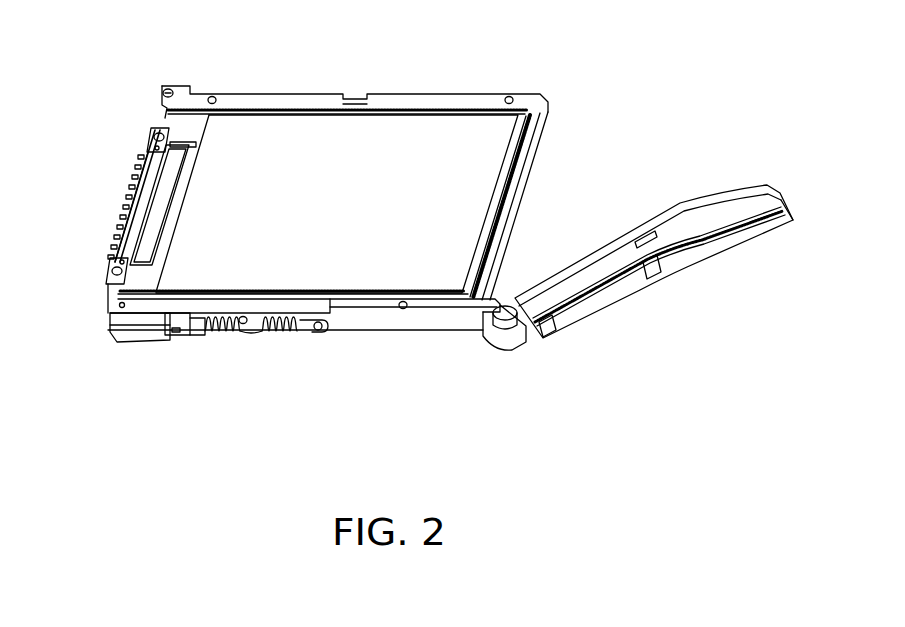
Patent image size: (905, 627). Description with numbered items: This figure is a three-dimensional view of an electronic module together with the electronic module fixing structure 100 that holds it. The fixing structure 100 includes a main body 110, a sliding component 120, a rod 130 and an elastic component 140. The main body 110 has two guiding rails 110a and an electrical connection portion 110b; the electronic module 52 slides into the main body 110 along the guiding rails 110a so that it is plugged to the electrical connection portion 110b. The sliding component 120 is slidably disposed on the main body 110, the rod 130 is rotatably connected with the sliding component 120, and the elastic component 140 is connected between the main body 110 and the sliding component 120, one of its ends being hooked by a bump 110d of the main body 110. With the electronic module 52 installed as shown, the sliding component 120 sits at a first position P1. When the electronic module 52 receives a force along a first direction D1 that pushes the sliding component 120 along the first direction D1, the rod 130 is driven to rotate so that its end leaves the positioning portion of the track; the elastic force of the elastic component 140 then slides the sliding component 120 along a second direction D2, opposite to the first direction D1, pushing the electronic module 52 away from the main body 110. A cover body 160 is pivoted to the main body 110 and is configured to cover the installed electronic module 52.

The electronic module fixing structure 100 is at (534, 76).
The main body 110 is at (58, 108).
The guiding rails 110a is at (238, 102).
The electrical connection portion 110b is at (148, 188).
The bump 110d is at (315, 337).
The sliding component 120 is at (142, 337).
The rod 130 is at (178, 338).
The elastic component 140 is at (268, 337).
The cover body 160 is at (714, 228).
The electronic module 52 is at (418, 140).
The first position P1 is at (105, 338).
The first direction D1 is at (427, 355).
The second direction D2 is at (440, 355).